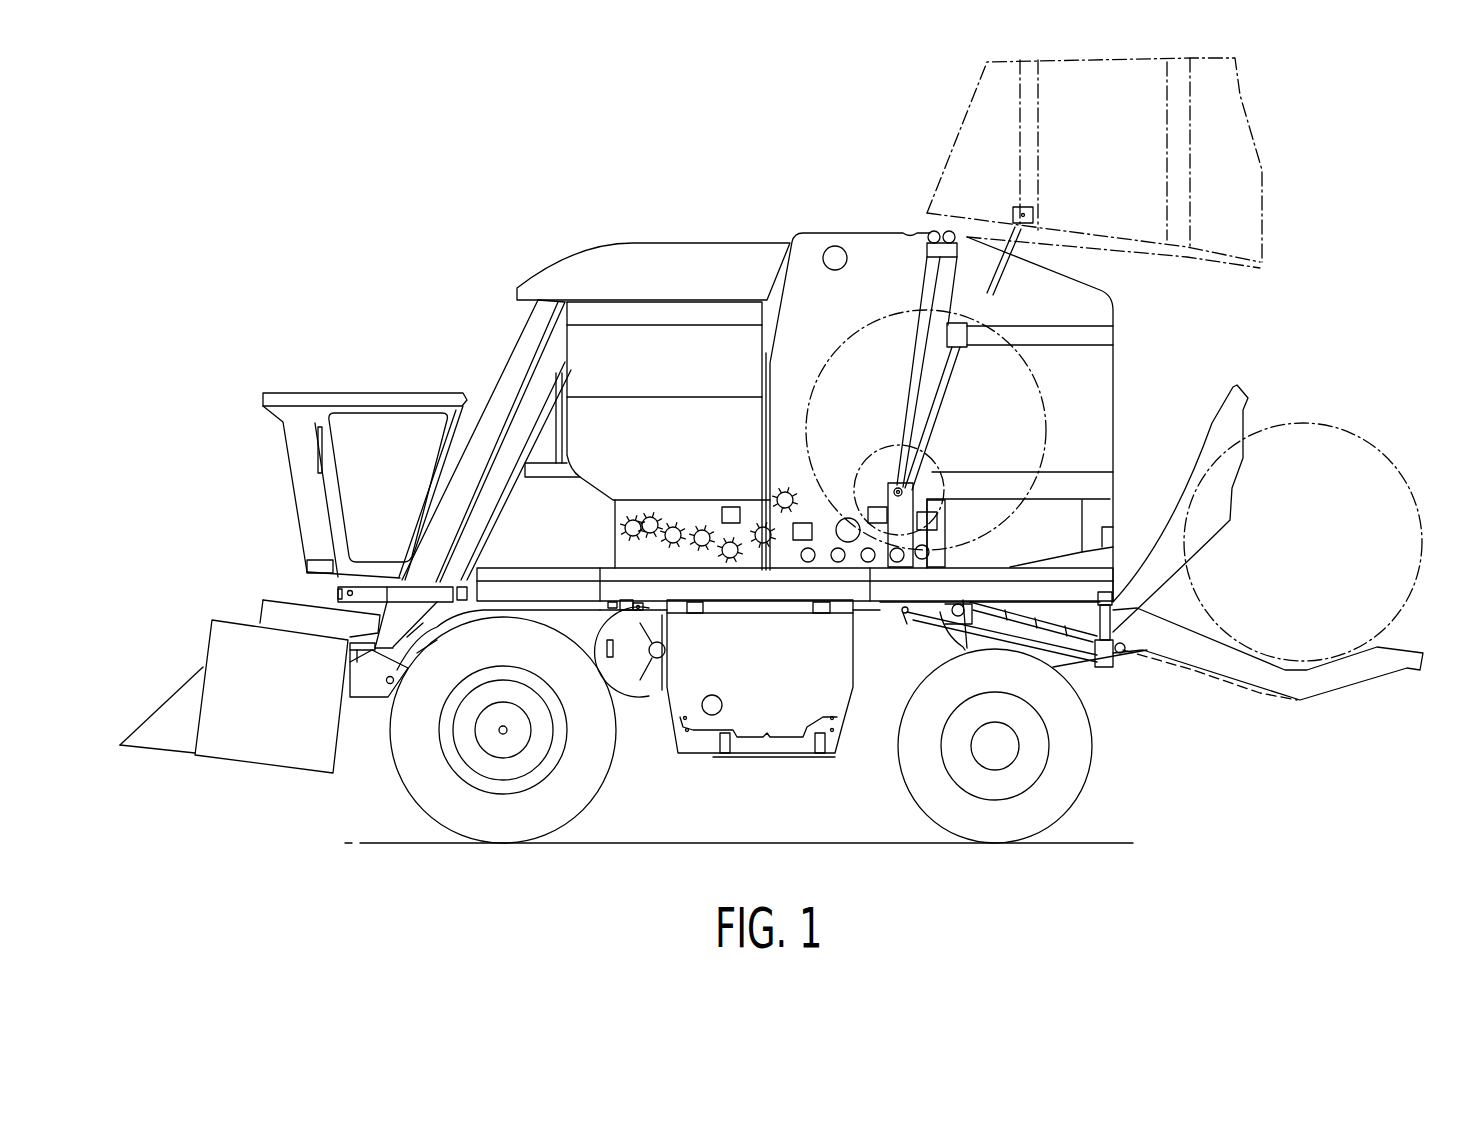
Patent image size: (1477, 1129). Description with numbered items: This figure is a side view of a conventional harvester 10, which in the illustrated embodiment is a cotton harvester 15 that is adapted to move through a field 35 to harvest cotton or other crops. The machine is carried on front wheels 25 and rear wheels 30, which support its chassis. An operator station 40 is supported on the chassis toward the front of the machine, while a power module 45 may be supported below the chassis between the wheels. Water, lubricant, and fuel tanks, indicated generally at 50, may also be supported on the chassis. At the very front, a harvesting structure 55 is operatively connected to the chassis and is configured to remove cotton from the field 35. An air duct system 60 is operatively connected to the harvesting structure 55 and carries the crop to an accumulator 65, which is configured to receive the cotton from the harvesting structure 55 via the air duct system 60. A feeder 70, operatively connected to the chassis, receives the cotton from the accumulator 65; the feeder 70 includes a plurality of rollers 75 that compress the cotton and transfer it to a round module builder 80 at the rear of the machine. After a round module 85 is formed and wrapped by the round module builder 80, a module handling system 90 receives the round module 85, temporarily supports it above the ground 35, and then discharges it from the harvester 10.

The harvester 10 is at (162, 130).
The cotton harvester 15 is at (468, 197).
The front wheels 25 is at (593, 788).
The rear wheels 30 is at (1082, 752).
The field 35 is at (382, 838).
The operator station 40 is at (285, 397).
The power module 45 is at (770, 713).
The water, lubricant, and fuel tanks 50 is at (521, 497).
The harvesting structure 55 is at (235, 638).
The air duct system 60 is at (536, 330).
The accumulator 65 is at (655, 337).
The feeder 70 is at (703, 510).
The rollers 75 is at (670, 530).
The round module builder 80 is at (873, 261).
The round module 85 is at (1047, 407).
The module handling system 90 is at (1353, 673).